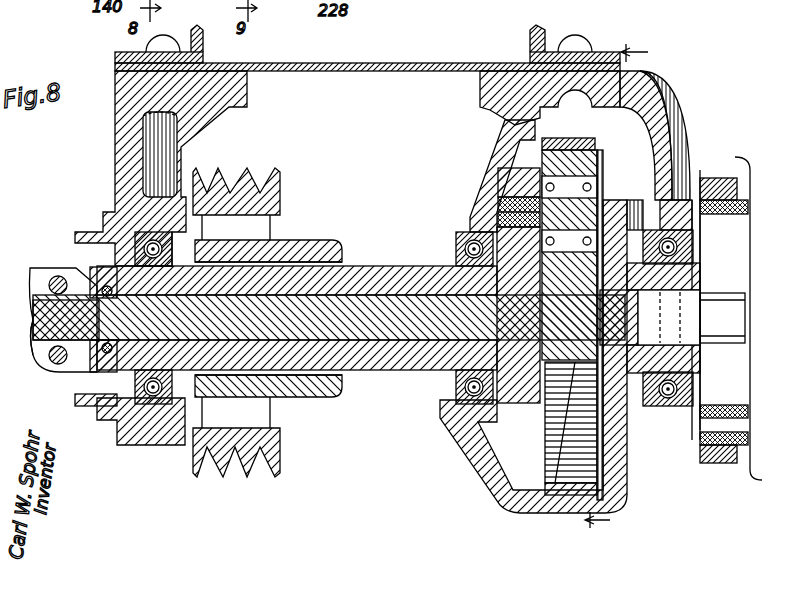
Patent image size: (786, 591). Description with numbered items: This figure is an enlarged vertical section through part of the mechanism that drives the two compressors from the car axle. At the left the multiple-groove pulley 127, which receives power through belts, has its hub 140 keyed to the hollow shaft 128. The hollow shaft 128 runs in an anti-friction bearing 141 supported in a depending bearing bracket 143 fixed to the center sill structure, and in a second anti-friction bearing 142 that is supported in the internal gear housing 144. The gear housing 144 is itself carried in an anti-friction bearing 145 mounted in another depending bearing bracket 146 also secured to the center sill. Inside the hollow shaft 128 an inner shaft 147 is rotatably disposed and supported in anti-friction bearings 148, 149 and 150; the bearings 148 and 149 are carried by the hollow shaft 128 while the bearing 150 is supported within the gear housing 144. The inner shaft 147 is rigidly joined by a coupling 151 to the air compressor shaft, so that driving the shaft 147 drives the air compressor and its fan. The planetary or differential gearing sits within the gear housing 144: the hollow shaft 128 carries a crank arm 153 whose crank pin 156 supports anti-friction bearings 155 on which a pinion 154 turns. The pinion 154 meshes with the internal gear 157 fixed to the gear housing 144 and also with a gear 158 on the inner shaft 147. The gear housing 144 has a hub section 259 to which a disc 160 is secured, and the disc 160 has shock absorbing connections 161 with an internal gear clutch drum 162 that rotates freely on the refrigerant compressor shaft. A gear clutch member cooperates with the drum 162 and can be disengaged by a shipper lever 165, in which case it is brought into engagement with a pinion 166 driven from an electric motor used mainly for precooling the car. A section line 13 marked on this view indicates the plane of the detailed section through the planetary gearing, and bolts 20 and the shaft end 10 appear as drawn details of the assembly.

The shaft end socket 10 is at (746, 322).
The section line 13 is at (627, 287).
The bolts 20 is at (369, 26).
The pulley 127 is at (278, 455).
The hollow shaft 128 is at (382, 372).
The hub 140 is at (308, 246).
The anti-friction bearing 141 is at (112, 428).
The anti-friction bearing 142 is at (456, 248).
The bearing bracket 143 is at (117, 168).
The internal gear housing 144 is at (512, 150).
The anti-friction bearing 145 is at (672, 408).
The bearing bracket 146 is at (648, 138).
The shaft 147 is at (418, 372).
The anti-friction bearing 148 is at (95, 268).
The anti-friction bearing 149 is at (540, 360).
The anti-friction bearing 150 is at (600, 432).
The coupling 151 is at (55, 376).
The crank arm 153 is at (510, 184).
The pinion 154 is at (504, 178).
The anti-friction bearings 155 is at (598, 180).
The crank pin 156 is at (498, 200).
The internal gear 157 is at (545, 138).
The gear 158 is at (505, 470).
The disc 160 is at (738, 378).
The shock absorbing connections 161 is at (740, 216).
The internal gear clutch drum 162 is at (756, 480).
The shipper lever 165 is at (748, 438).
The pinion 166 is at (743, 456).
The hub section 259 is at (700, 278).